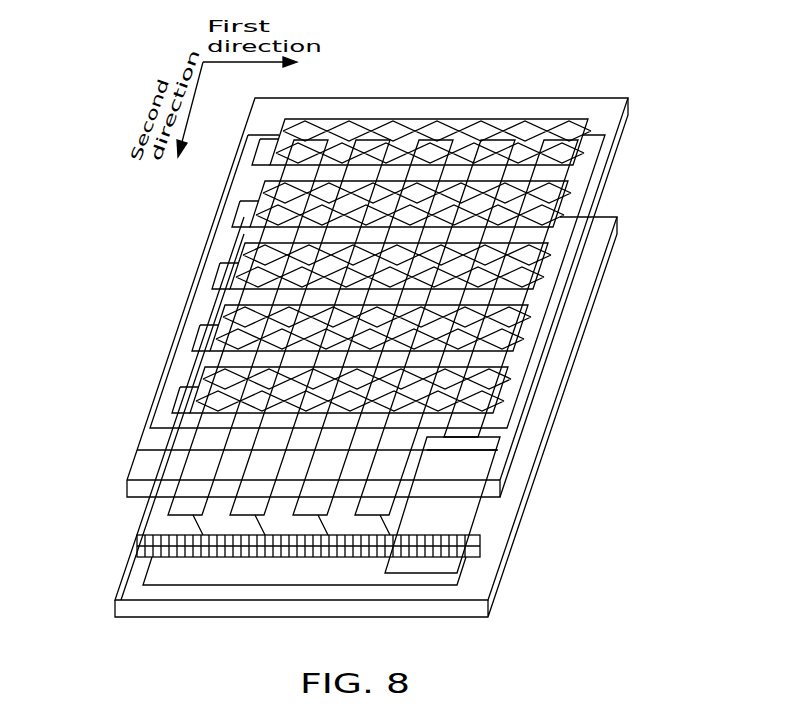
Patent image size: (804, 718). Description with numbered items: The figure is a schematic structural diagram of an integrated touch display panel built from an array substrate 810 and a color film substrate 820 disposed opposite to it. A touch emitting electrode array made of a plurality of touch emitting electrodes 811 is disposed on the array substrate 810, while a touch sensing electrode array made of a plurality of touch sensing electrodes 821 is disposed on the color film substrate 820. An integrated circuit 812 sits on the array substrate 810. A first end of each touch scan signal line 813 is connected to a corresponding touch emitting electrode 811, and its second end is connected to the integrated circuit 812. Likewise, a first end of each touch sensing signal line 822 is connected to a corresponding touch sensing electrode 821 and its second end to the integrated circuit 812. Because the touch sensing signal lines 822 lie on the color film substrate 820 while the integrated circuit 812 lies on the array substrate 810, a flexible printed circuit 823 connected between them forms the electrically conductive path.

The array substrate 810 is at (588, 252).
The touch emitting electrodes 811 is at (175, 497).
The integrated circuit 812 is at (137, 546).
The touch scan signal lines 813 is at (250, 523).
The color film substrate 820 is at (593, 131).
The touch sensing electrodes 821 is at (483, 133).
The touch sensing signal lines 822 is at (222, 222).
The flexible printed circuit 823 is at (455, 523).